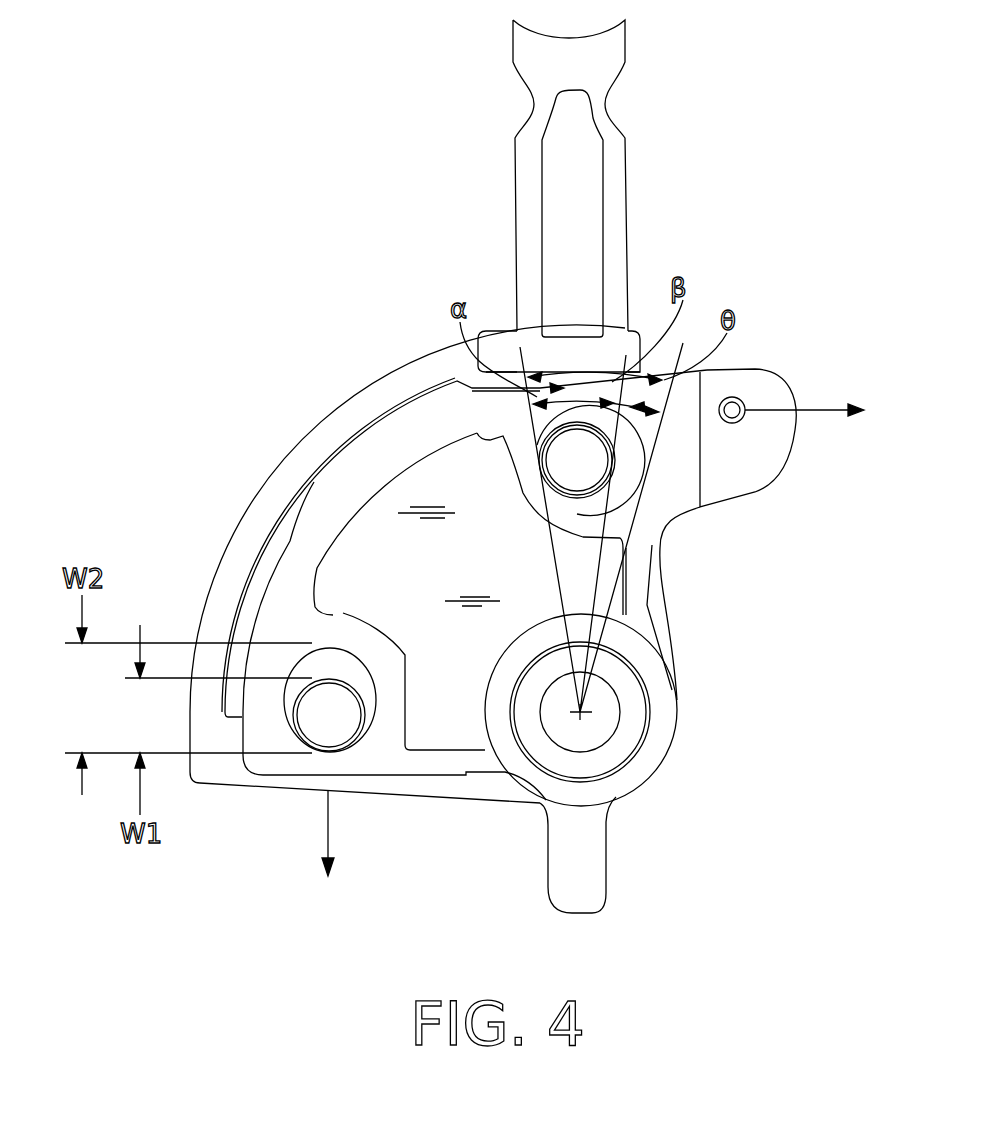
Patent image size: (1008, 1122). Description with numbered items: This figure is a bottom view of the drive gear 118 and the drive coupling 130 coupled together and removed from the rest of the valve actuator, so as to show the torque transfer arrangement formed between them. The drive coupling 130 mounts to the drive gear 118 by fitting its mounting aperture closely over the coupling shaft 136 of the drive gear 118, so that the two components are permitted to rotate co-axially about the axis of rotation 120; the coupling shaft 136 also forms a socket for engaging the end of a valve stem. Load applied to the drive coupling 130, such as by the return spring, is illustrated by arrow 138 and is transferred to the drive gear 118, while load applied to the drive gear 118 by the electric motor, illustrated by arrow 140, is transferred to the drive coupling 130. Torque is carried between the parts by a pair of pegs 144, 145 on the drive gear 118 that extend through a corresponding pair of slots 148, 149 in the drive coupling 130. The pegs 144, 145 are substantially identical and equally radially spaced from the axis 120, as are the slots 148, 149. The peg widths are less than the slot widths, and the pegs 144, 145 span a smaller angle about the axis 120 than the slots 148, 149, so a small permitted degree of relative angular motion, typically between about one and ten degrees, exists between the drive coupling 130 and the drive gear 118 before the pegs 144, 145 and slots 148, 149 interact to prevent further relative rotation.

The drive gear 118 is at (288, 480).
The axis of rotation 120 is at (583, 717).
The drive coupling 130 is at (383, 463).
The coupling shaft 136 is at (638, 710).
The arrow 138 is at (830, 407).
The arrow 140 is at (323, 833).
The peg 144 is at (345, 735).
The peg 145 is at (558, 463).
The slot 148 is at (325, 662).
The slot 149 is at (638, 467).